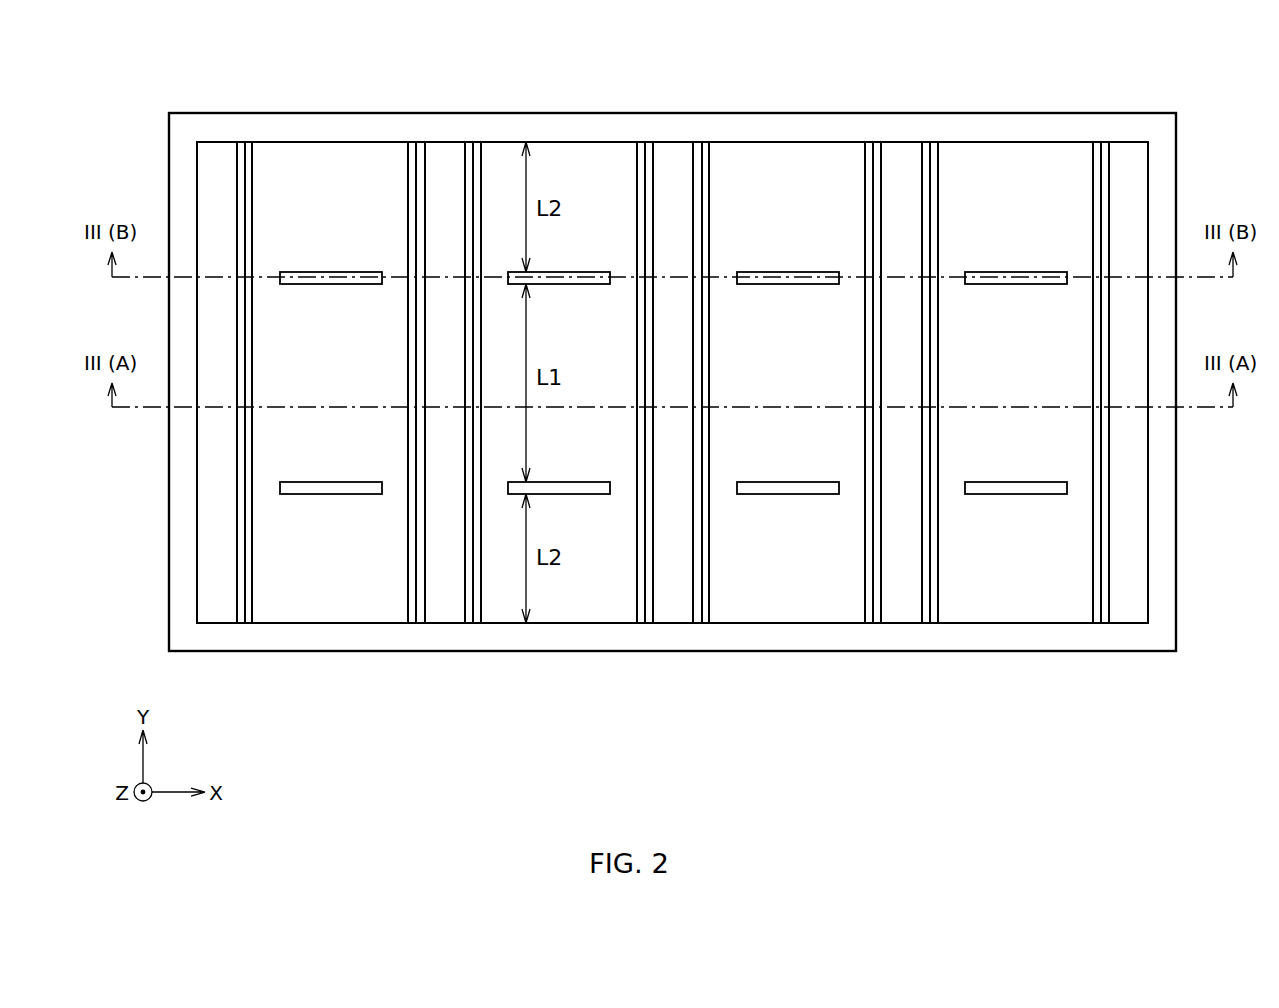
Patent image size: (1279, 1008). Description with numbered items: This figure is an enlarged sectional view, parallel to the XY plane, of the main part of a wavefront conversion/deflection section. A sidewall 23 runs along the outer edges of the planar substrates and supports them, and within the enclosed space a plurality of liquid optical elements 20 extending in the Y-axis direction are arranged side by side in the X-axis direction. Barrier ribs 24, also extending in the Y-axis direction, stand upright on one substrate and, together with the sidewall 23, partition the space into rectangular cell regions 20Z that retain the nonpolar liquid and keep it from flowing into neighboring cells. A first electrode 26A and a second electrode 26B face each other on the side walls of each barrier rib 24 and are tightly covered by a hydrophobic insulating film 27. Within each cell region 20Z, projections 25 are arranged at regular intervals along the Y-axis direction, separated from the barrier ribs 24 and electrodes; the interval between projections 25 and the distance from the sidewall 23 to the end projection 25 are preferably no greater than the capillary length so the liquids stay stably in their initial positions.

The liquid optical element 20 is at (220, 100).
The cell region 20Z is at (298, 598).
The sidewall 23 is at (362, 642).
The barrier rib 24 is at (220, 612).
The projection 25 is at (280, 488).
The first electrode 26A is at (470, 612).
The second electrode 26B is at (650, 612).
The hydrophobic insulating film 27 is at (937, 612).